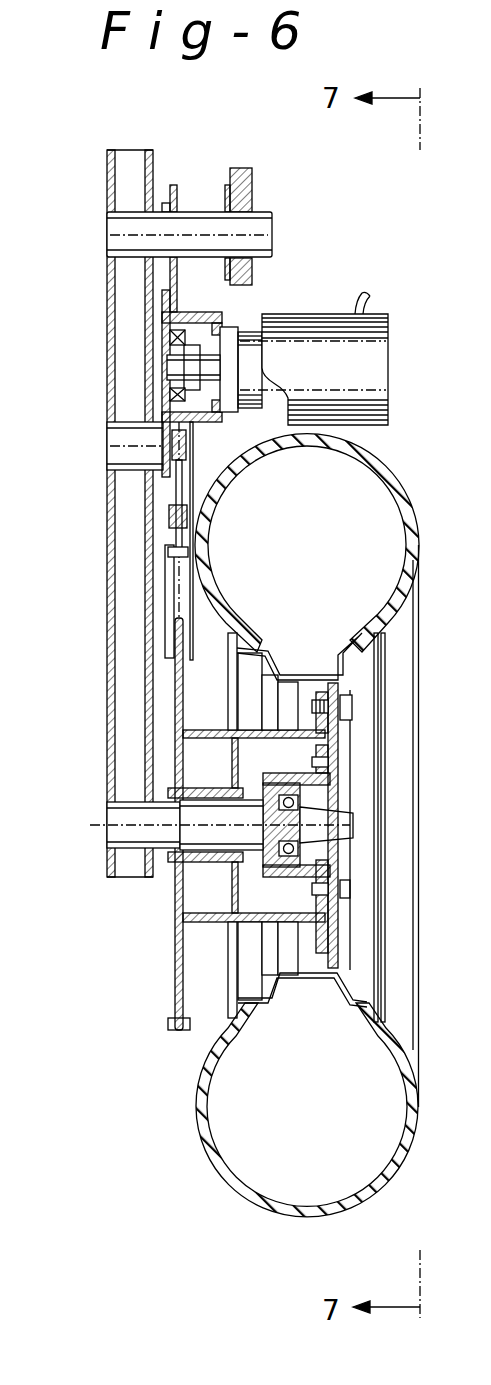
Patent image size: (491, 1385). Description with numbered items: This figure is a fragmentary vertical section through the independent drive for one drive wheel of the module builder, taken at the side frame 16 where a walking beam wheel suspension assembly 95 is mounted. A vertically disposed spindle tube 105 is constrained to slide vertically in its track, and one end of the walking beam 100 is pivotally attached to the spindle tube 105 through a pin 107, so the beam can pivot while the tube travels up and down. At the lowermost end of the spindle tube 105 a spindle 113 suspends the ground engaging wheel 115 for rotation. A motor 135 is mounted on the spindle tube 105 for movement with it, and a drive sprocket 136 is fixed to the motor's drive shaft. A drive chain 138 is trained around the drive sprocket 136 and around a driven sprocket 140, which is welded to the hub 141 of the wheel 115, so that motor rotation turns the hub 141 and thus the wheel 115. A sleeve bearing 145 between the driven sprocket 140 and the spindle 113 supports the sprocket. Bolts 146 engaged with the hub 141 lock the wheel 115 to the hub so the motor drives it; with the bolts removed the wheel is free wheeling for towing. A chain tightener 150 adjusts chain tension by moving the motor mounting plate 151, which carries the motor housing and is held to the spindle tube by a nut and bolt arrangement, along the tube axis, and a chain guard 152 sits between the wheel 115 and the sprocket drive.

The side frame 16 is at (102, 467).
The walking beam wheel suspension assembly 95 is at (398, 446).
The walking beam 100 is at (250, 174).
The spindle tube 105 is at (153, 166).
The pin 107 is at (264, 220).
The spindle 113 is at (108, 820).
The ground engaging wheel 115 is at (197, 1113).
The motor 135 is at (352, 372).
The drive sprocket 136 is at (179, 331).
The drive chain 138 is at (184, 500).
The driven sprocket 140 is at (175, 968).
The hub 141 is at (196, 922).
The sleeve bearing 145 is at (193, 862).
The bolt 146 is at (346, 694).
The chain tightener 150 is at (184, 522).
The motor mounting plate 151 is at (223, 316).
The chain guard 152 is at (194, 457).